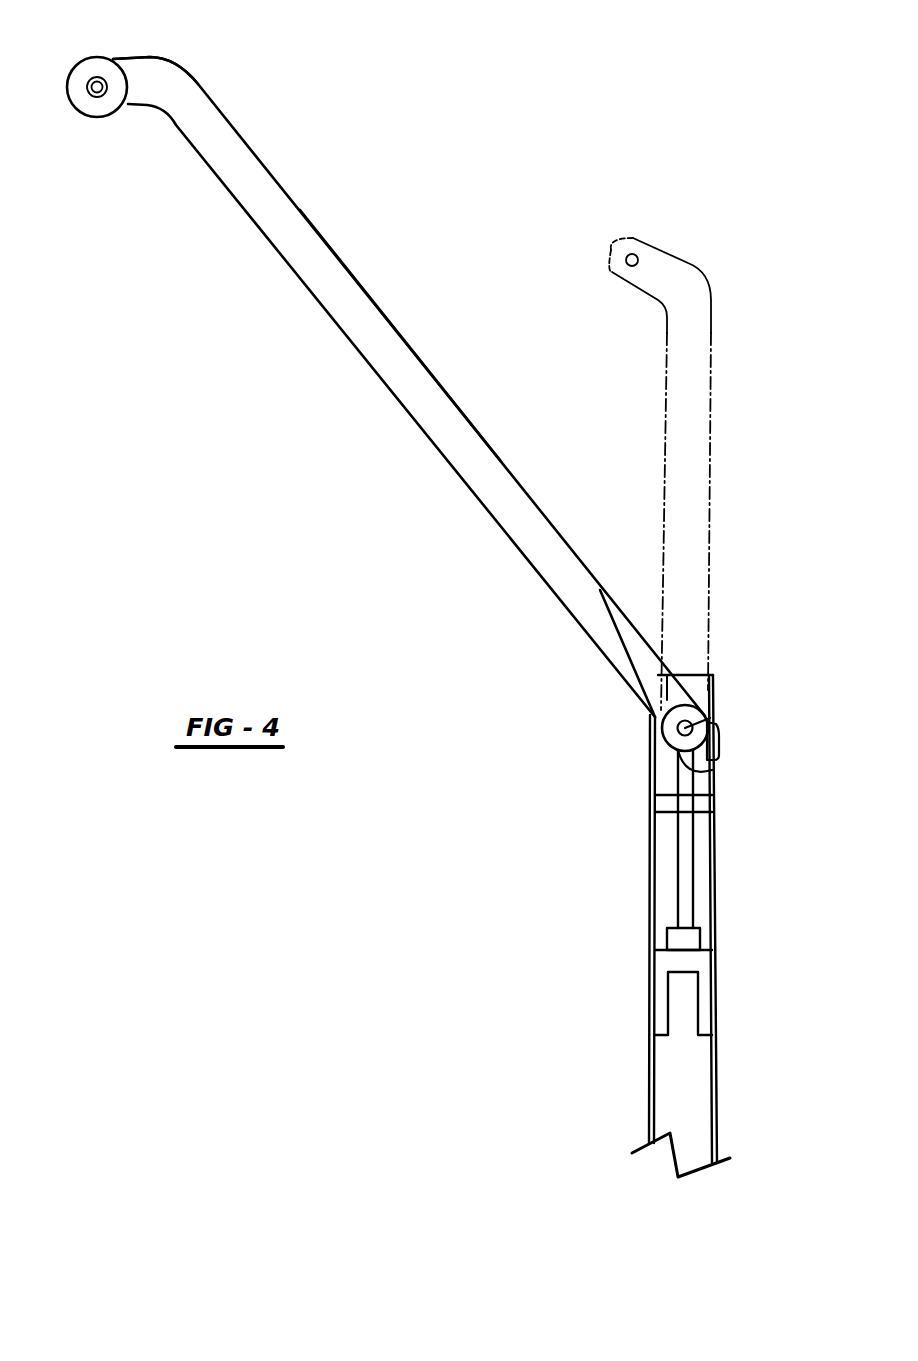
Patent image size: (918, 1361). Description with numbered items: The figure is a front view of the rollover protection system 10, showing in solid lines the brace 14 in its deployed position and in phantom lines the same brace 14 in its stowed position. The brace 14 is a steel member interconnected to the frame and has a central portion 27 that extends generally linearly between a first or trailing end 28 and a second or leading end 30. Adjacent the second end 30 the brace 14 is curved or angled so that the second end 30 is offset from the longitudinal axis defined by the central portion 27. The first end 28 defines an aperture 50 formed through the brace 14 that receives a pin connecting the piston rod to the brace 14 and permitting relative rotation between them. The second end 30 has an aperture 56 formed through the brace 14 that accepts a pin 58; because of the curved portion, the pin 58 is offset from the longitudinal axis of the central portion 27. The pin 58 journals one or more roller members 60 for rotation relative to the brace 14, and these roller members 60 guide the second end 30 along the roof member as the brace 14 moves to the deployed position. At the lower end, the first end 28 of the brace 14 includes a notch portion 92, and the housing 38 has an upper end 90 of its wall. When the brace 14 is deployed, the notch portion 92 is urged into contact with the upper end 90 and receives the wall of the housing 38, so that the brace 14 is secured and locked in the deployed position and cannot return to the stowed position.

The rollover protection system 10 is at (518, 150).
The brace 14 is at (291, 272).
The central portion 27 is at (368, 325).
The first end 28 is at (640, 699).
The second end 30 is at (192, 97).
The housing 38 is at (721, 1017).
The aperture 50 is at (711, 713).
The aperture 56 is at (638, 257).
The pin 58 is at (88, 85).
The roller members 60 is at (86, 115).
The upper end 90 is at (717, 772).
The notch portion 92 is at (719, 757).